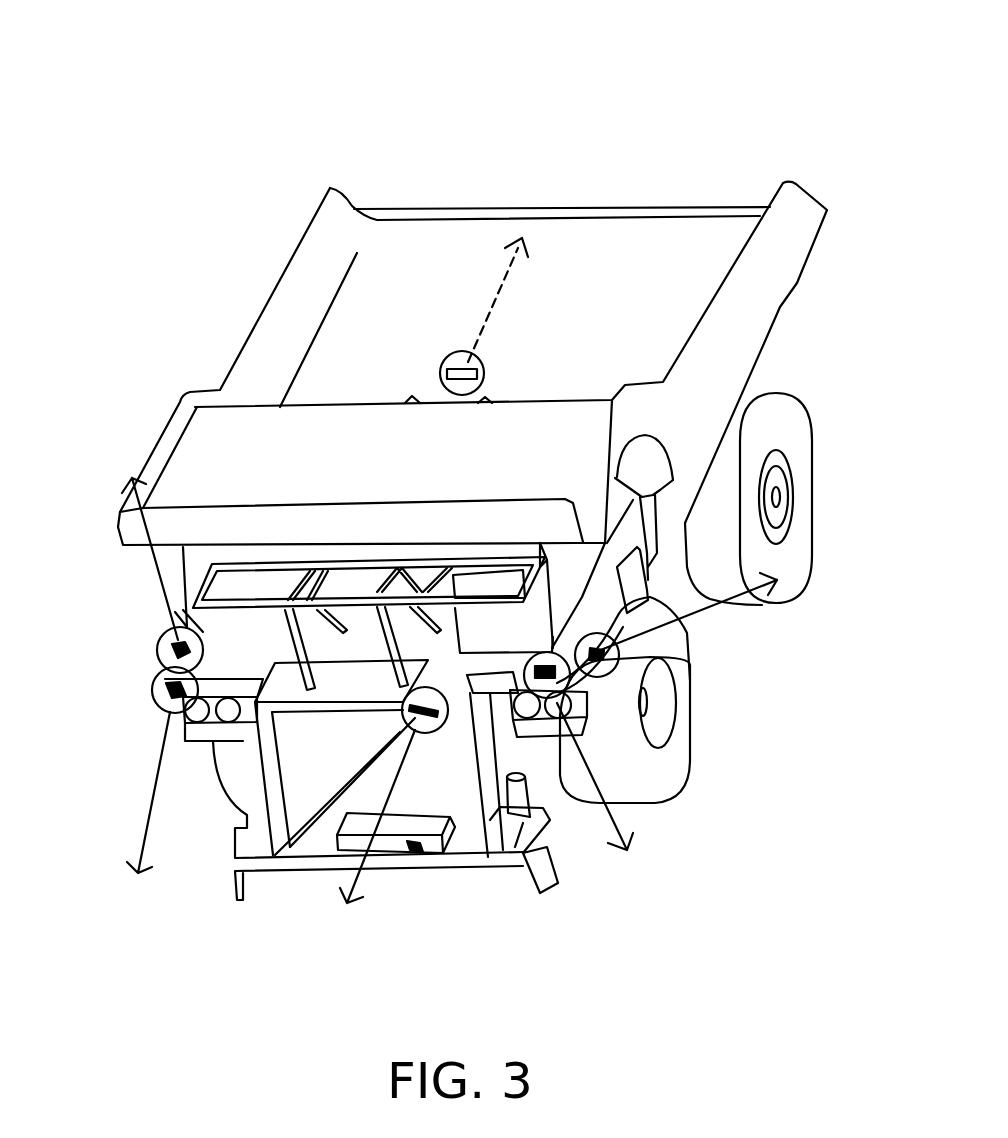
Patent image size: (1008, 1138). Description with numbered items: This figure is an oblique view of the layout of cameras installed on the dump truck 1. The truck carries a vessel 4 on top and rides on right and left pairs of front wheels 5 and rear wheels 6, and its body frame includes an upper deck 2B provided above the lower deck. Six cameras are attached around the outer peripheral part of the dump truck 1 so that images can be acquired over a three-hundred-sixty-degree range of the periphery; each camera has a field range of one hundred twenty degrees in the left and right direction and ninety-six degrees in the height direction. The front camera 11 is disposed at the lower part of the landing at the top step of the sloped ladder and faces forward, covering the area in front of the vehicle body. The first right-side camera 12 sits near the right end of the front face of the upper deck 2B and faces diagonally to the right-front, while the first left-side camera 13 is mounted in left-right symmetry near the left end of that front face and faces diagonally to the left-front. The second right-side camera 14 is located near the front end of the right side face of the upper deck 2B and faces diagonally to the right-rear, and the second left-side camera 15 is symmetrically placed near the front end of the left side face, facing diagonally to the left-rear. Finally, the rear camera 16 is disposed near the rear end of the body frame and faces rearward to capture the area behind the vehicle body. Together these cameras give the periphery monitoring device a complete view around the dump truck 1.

The dump truck 1 is at (598, 100).
The upper deck 2B is at (175, 612).
The vessel 4 is at (655, 245).
The front wheels 5 is at (662, 793).
The rear wheels 6 is at (792, 576).
The front camera 11 is at (425, 733).
The first right-side camera 12 is at (165, 690).
The first left-side camera 13 is at (583, 692).
The second right-side camera 14 is at (158, 650).
The second left-side camera 15 is at (628, 652).
The rear camera 16 is at (452, 362).